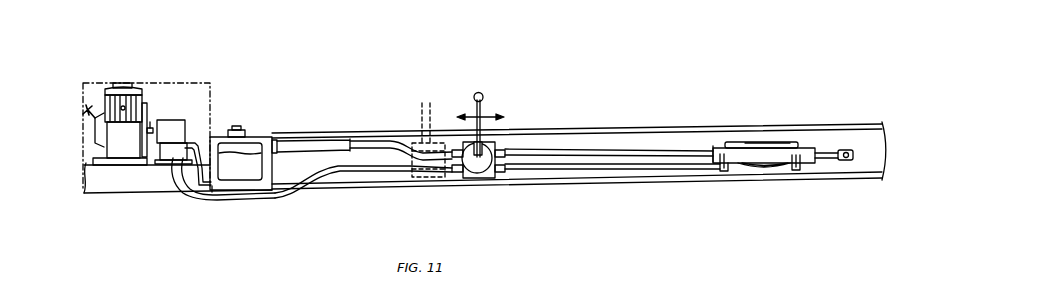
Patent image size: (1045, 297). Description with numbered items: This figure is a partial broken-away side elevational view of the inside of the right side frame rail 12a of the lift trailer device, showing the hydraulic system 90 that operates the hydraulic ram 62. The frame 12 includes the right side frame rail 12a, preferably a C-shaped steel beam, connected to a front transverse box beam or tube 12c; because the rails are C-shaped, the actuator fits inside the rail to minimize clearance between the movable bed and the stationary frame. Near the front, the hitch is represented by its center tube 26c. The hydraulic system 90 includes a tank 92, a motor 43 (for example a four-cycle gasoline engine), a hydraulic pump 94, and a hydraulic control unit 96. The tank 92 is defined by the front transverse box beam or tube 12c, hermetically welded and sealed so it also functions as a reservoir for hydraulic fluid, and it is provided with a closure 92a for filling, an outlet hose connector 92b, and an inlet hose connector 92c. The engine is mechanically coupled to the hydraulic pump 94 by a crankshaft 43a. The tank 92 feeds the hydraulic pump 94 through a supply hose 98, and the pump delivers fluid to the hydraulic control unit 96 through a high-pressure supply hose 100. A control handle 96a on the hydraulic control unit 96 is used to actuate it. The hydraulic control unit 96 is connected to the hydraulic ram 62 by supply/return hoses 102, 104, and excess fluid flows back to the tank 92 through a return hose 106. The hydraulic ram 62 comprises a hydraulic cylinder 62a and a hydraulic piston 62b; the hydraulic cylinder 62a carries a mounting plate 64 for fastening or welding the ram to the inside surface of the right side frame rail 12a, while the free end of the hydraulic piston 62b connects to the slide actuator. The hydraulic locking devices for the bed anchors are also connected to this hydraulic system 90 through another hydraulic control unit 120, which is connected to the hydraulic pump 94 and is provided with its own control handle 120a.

The frame 12 is at (598, 122).
The right side frame rail 12a is at (291, 138).
The front transverse box beam or tube 12c is at (211, 136).
The center tube 26c is at (97, 182).
The motor 43 is at (112, 134).
The motor power lead 43a is at (150, 127).
The hydraulic ram 62 is at (742, 140).
The hydraulic cylinder 62a is at (763, 152).
The hydraulic piston 62b is at (825, 161).
The mounting plate 64 is at (778, 143).
The hydraulic system 90 is at (97, 80).
The tank 92 is at (236, 176).
The closure 92a is at (234, 130).
The outlet hose connector 92b is at (211, 188).
The inlet hose connector 92c is at (271, 137).
The hydraulic pump 94 is at (168, 120).
The hydraulic control unit 96 is at (463, 142).
The control handle 96a is at (479, 92).
The supply hose 98 is at (189, 187).
The high-pressure supply hose 100 is at (358, 172).
The supply/return hose 102 is at (590, 168).
The supply/return hose 104 is at (638, 150).
The return hose 106 is at (344, 139).
The hydraulic control unit 120 is at (408, 131).
The relief valve adjustment 120a is at (422, 103).